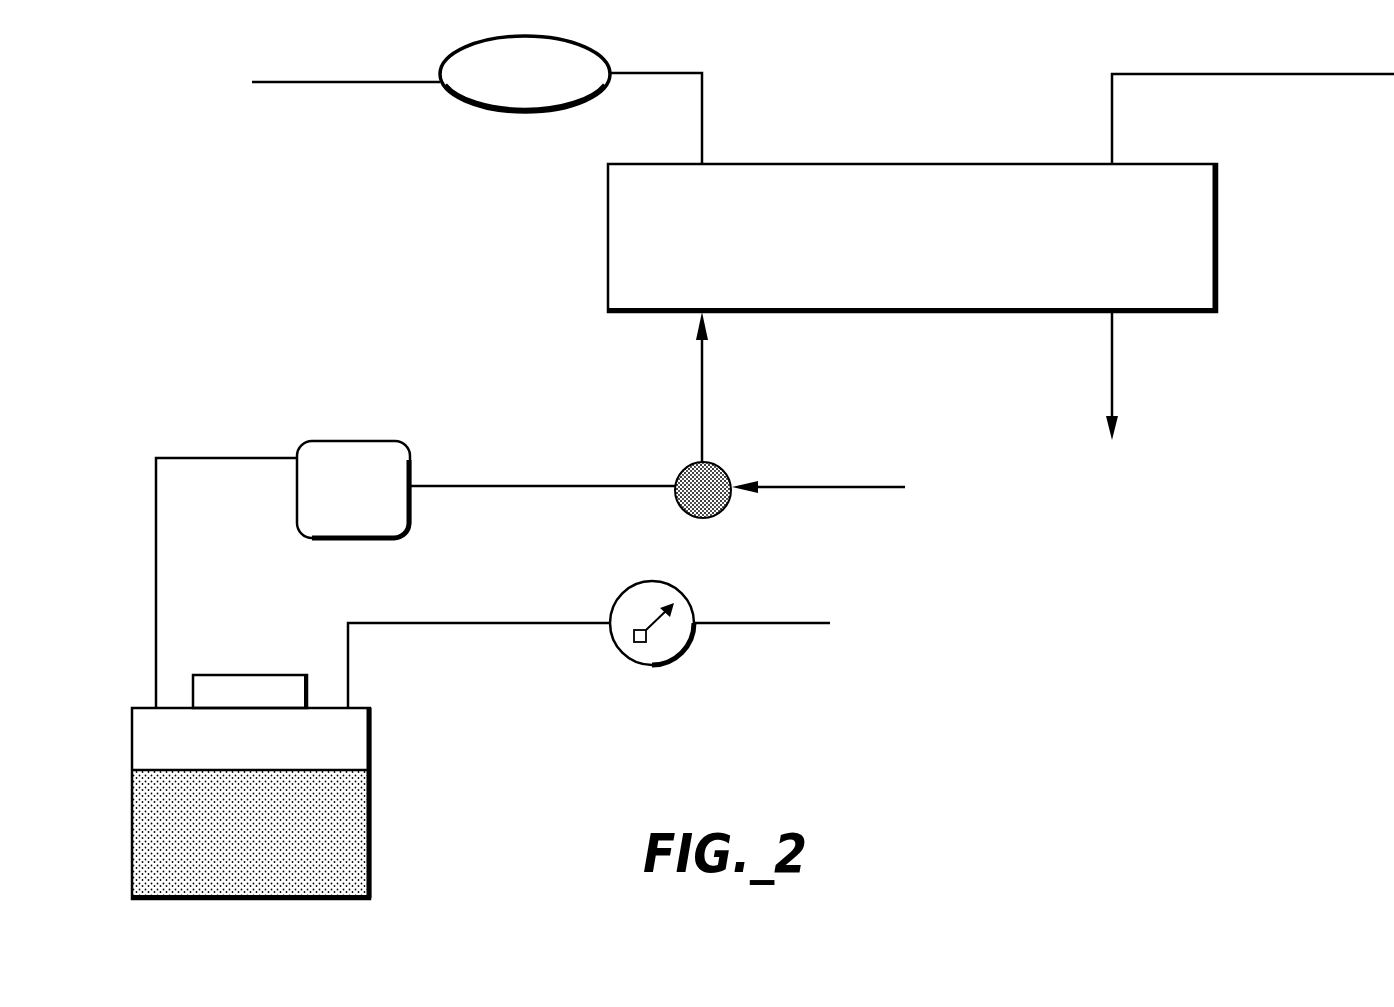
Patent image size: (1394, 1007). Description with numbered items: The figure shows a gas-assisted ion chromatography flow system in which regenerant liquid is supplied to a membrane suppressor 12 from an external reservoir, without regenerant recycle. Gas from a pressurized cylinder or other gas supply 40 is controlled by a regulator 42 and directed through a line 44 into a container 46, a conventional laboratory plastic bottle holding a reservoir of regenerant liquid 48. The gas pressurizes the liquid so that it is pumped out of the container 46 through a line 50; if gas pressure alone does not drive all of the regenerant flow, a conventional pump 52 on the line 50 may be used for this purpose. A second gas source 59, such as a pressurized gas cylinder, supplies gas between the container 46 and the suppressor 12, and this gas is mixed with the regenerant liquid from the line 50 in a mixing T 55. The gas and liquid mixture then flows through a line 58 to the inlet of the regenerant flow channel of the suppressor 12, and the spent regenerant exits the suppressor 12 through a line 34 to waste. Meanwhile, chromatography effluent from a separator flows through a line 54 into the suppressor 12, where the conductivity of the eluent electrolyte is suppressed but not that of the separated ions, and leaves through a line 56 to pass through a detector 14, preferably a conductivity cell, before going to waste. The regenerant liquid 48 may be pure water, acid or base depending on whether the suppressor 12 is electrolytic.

The suppressor 12 is at (1217, 213).
The detector 14 is at (527, 112).
The line 34 is at (1112, 387).
The gas supply 40 is at (872, 606).
The regulator 42 is at (650, 582).
The line 44 is at (493, 623).
The container 46 is at (372, 770).
The regenerant liquid 48 is at (259, 877).
The line 50 is at (505, 486).
The pump 52 is at (345, 441).
The line 54 is at (1164, 74).
The mixing T 55 is at (714, 462).
The line 56 is at (658, 73).
The line 58 is at (702, 410).
The gas source 59 is at (826, 487).